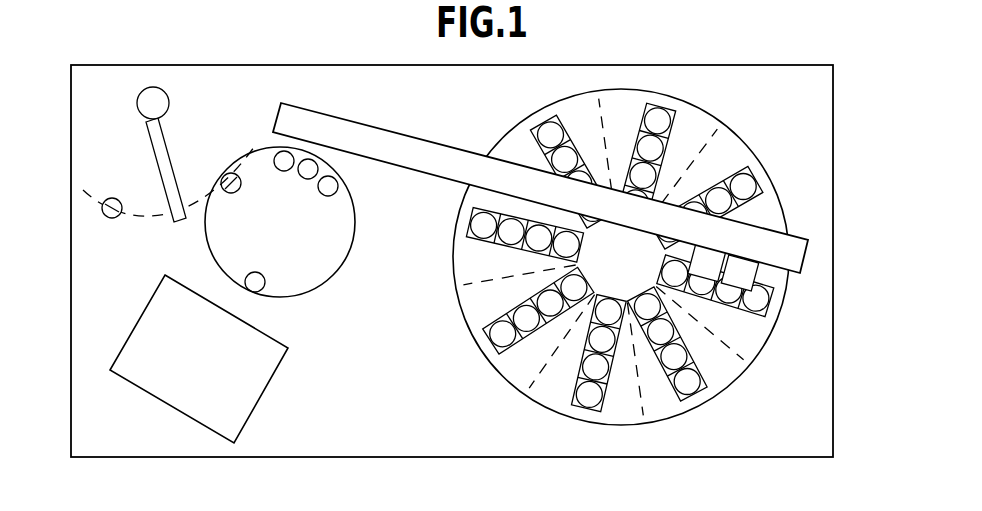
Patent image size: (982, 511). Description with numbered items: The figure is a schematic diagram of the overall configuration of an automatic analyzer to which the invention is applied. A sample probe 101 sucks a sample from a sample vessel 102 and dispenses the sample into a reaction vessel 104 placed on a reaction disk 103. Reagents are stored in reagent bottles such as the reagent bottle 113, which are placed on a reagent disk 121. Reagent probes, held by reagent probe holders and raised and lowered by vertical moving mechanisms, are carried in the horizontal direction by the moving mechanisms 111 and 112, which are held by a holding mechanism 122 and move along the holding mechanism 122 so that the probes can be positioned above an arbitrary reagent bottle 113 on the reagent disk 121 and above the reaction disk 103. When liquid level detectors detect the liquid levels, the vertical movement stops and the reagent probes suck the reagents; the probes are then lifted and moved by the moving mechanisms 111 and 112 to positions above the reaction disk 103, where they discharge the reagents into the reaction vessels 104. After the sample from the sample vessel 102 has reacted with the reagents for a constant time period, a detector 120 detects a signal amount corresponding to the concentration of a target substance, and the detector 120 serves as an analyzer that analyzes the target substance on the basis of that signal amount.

The sample probe 101 is at (170, 160).
The sample vessel 102 is at (122, 217).
The reaction disk 103 is at (305, 282).
The reaction vessel 104 is at (282, 157).
The moving mechanism 111 is at (712, 258).
The moving mechanism 112 is at (747, 272).
The reagent bottle 113 is at (483, 227).
The detector 120 is at (168, 396).
The reagent disk 121 is at (730, 373).
The holding mechanism 122 is at (383, 142).